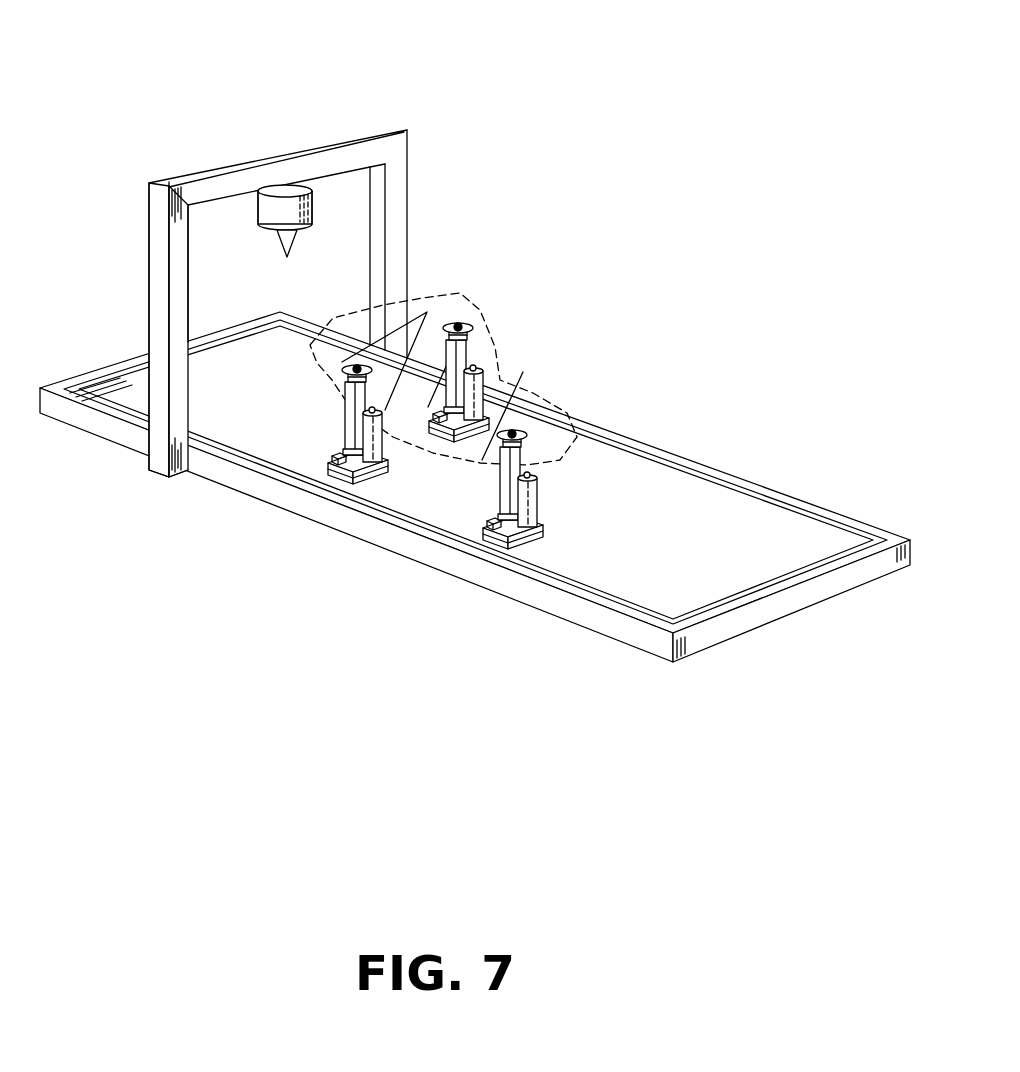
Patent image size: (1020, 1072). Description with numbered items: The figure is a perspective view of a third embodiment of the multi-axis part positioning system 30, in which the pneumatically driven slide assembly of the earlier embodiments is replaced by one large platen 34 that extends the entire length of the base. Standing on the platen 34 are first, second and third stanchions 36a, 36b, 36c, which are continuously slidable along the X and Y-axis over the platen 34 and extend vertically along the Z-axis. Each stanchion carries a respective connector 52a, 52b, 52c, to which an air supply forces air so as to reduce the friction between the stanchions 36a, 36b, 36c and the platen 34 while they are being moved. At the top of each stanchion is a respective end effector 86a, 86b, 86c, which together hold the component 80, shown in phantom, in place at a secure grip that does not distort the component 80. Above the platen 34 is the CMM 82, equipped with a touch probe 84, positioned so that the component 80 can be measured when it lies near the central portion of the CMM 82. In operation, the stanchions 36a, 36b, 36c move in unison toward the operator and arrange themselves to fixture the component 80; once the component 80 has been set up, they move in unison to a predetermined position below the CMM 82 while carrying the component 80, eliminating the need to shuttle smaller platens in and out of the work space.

The positioning system 30 is at (658, 285).
The platen 34 is at (683, 565).
The first stanchion 36a is at (543, 347).
The second stanchion 36b is at (505, 554).
The third stanchion 36c is at (275, 450).
The connector 52a is at (510, 381).
The connector 52b is at (525, 548).
The connector 52c is at (330, 470).
The component 80 is at (425, 298).
The CMM 82 is at (303, 173).
The touch probe 84 is at (276, 266).
The end effector 86a is at (464, 325).
The end effector 86b is at (528, 441).
The end effector 86c is at (345, 368).